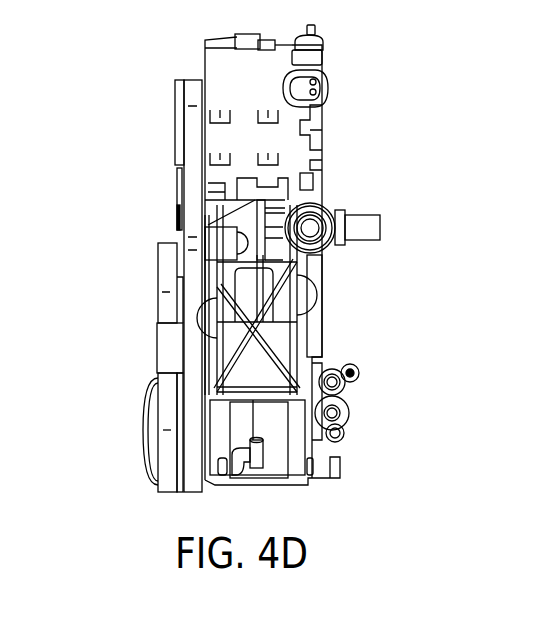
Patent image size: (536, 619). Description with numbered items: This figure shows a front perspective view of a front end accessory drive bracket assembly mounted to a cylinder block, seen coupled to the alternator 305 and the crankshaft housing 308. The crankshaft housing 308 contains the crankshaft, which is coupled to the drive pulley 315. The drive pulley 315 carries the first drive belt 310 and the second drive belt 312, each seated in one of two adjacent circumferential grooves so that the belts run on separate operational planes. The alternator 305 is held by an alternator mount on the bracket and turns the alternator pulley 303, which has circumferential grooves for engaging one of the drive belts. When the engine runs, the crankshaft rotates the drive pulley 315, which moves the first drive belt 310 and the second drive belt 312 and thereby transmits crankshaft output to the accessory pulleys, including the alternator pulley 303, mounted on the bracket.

The alternator pulley 303 is at (175, 123).
The alternator 305 is at (323, 92).
The crankshaft housing 308 is at (347, 418).
The first drive belt 310 is at (192, 190).
The second drive belt 312 is at (167, 263).
The drive pulley 315 is at (145, 432).